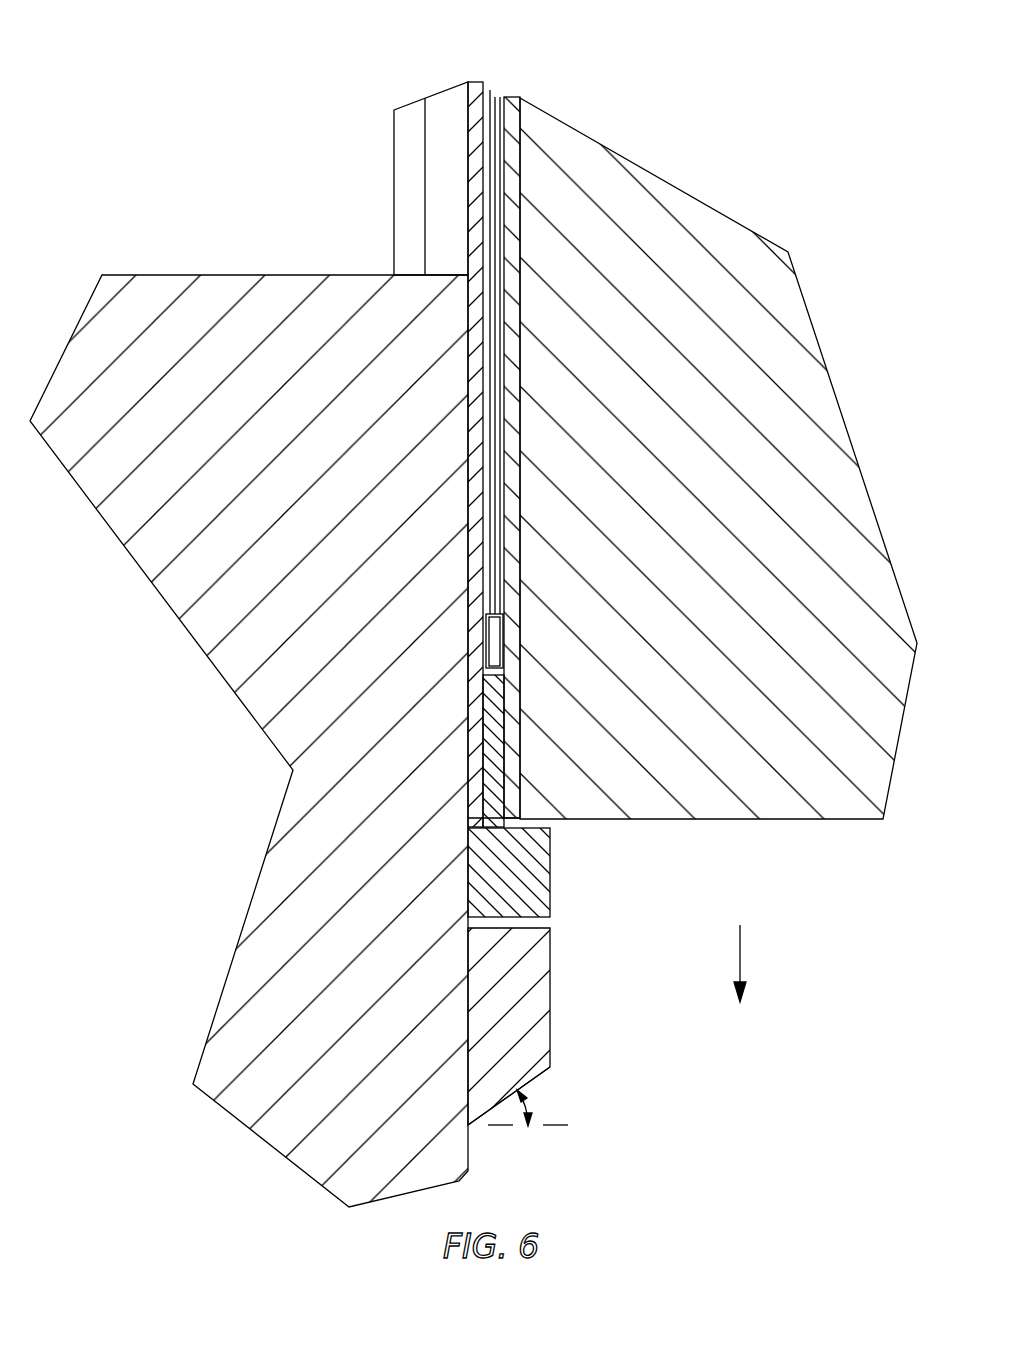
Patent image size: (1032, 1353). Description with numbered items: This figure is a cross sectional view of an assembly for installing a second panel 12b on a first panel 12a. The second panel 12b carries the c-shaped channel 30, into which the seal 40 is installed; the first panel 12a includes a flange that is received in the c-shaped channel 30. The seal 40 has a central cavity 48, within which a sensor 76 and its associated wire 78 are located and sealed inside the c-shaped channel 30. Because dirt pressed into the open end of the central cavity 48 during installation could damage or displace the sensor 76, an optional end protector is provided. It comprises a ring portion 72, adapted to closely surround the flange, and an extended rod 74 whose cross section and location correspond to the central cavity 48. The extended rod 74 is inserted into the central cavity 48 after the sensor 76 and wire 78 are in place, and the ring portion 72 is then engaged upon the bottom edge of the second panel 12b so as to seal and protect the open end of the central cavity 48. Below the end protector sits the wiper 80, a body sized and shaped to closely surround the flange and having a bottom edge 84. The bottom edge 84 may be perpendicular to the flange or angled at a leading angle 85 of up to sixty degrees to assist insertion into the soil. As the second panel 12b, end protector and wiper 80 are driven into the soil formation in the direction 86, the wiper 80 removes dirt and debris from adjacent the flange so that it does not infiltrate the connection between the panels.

The first panel 12a is at (271, 840).
The second panel 12b is at (692, 819).
The c-shaped channel 30 is at (455, 112).
The seal 40 is at (469, 82).
The central cavity 48 is at (498, 97).
The ring portion 72 is at (538, 895).
The extended rod 74 is at (498, 765).
The sensor 76 is at (498, 638).
The wire 78 is at (498, 317).
The wiper 80 is at (527, 995).
The bottom edge 84 is at (542, 1066).
The leading angle 85 is at (531, 1103).
The direction of insertion 86 is at (744, 955).